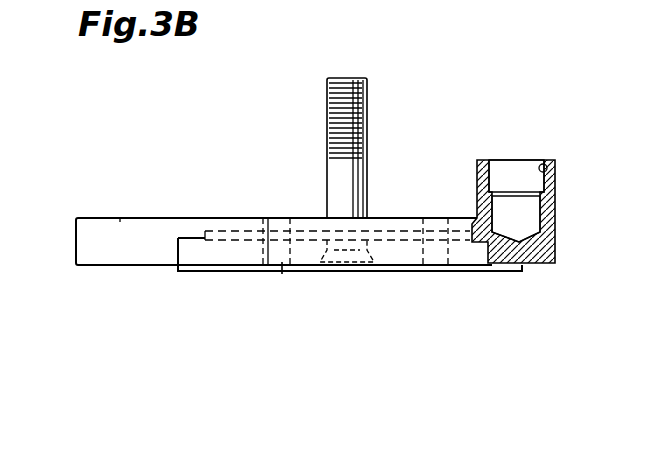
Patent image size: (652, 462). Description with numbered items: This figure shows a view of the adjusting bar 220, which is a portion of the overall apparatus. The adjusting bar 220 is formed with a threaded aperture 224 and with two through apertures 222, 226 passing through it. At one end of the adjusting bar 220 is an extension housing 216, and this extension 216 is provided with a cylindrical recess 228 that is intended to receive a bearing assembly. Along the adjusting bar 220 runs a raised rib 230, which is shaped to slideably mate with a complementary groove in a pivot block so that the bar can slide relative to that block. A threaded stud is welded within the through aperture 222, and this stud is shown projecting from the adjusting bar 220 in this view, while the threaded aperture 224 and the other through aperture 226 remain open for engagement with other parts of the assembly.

The extension housing 216 is at (556, 180).
The adjusting bar 220 is at (543, 266).
The through aperture 222 is at (348, 206).
The threaded aperture 224 is at (273, 274).
The through aperture 226 is at (436, 230).
The cylindrical recess 228 is at (521, 170).
The raised rib 230 is at (212, 230).